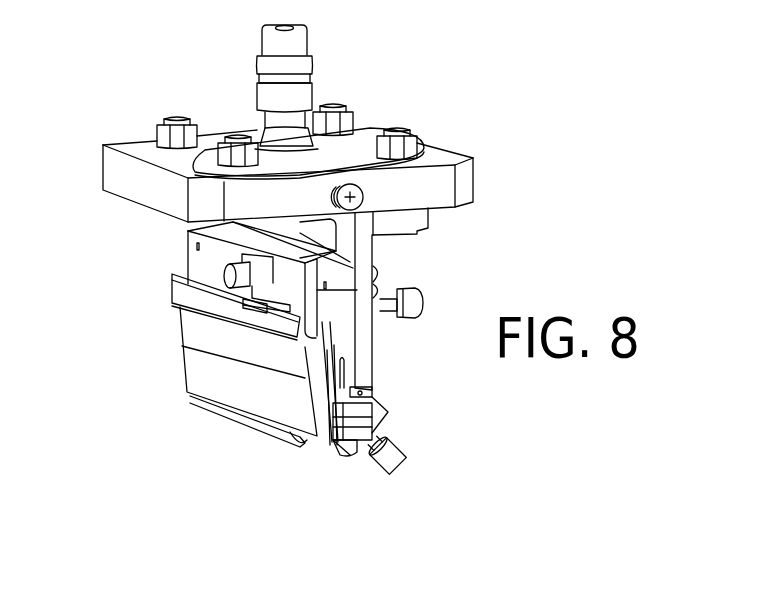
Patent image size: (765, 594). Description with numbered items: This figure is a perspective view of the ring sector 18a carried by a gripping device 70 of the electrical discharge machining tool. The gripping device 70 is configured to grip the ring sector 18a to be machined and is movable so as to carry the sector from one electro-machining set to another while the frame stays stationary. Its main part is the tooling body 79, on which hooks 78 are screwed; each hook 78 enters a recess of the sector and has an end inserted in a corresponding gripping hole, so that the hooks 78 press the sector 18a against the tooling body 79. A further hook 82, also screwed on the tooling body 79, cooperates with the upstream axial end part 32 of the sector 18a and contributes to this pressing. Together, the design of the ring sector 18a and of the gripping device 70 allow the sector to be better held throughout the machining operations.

The gripping device 70 is at (483, 178).
The tooling body 79 is at (368, 249).
The hook 82 is at (200, 254).
The upstream axial end part 32 is at (182, 292).
The ring sector 18a is at (195, 331).
The hook 78 is at (383, 417).